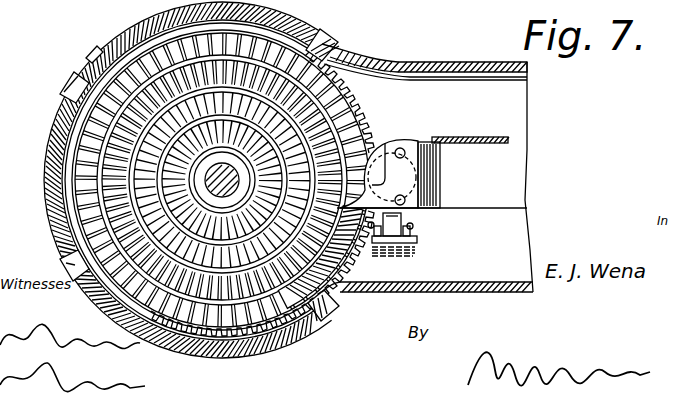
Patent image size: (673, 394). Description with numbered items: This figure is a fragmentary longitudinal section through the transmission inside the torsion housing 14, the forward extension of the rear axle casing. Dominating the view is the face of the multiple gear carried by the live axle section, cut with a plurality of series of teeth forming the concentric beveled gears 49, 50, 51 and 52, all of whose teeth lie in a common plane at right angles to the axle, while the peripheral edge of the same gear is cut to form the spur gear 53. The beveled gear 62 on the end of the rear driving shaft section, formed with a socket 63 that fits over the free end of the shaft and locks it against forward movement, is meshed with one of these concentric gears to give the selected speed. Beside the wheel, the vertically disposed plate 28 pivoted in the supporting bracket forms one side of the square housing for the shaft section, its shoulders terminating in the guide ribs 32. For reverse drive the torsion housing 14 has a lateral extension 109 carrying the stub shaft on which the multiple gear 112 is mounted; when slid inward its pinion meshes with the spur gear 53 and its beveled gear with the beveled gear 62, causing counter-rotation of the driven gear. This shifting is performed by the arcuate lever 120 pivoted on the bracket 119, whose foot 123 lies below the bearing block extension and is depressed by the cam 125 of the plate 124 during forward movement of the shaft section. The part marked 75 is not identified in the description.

The torsion housing 14 is at (477, 68).
The plate 28 is at (497, 200).
The guide ribs 32 is at (488, 141).
The beveled gear 49 is at (363, 66).
The beveled gear 50 is at (112, 183).
The beveled gear 51 is at (88, 53).
The beveled gear 52 is at (97, 223).
The spur gear 53 is at (328, 62).
The beveled gear 62 is at (366, 134).
The socket 63 is at (403, 146).
The lug 75 is at (70, 107).
The lateral extension 109 is at (412, 139).
The multiple gear 112 is at (441, 160).
The bracket 119 is at (417, 242).
The arcuate lever 120 is at (406, 243).
The foot 123 is at (401, 214).
The plate 124 is at (412, 180).
The cam 125 is at (372, 244).